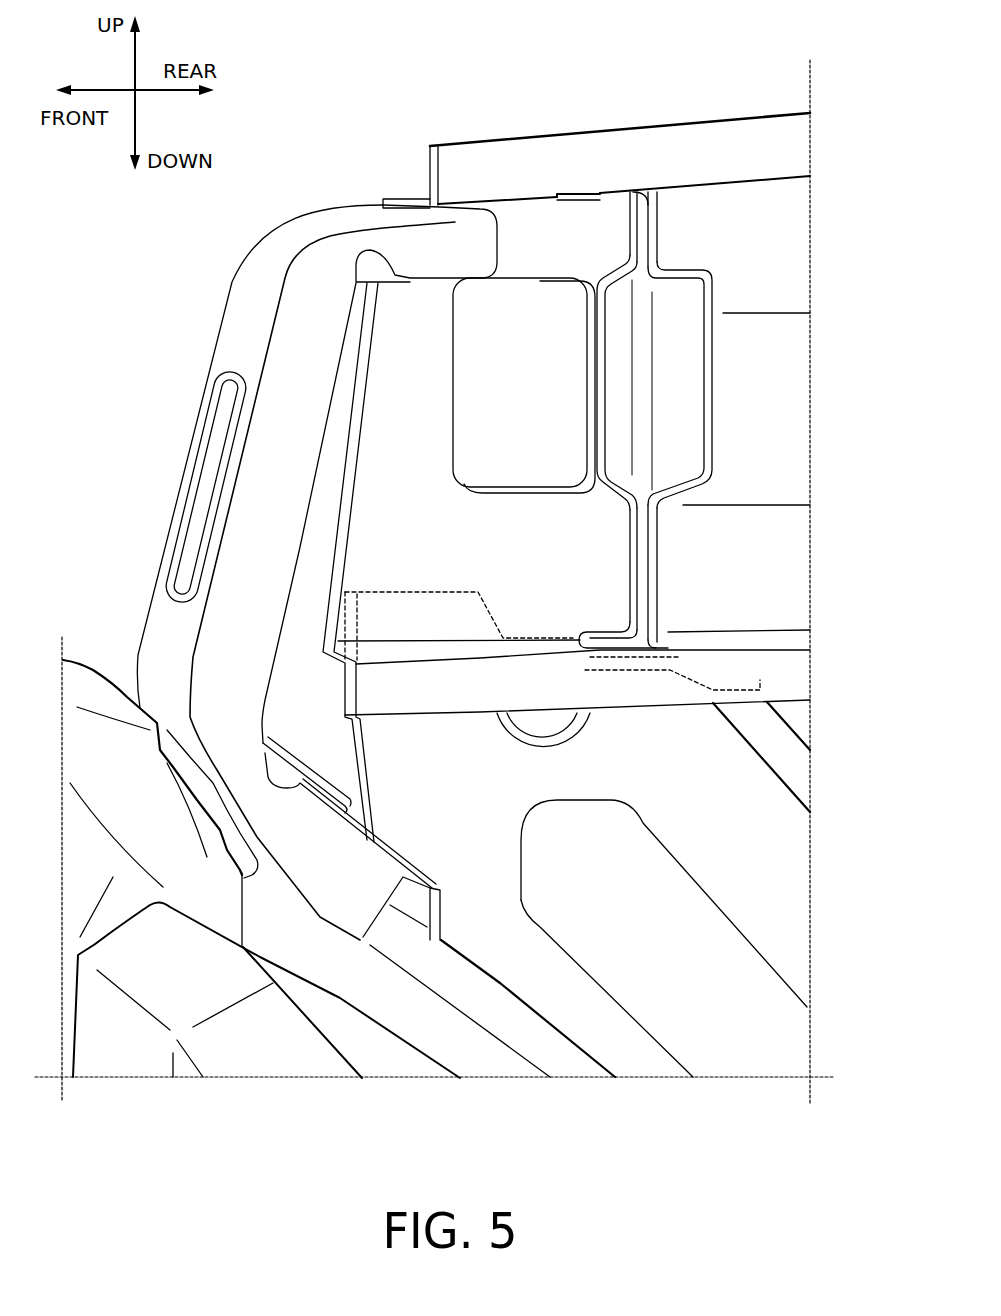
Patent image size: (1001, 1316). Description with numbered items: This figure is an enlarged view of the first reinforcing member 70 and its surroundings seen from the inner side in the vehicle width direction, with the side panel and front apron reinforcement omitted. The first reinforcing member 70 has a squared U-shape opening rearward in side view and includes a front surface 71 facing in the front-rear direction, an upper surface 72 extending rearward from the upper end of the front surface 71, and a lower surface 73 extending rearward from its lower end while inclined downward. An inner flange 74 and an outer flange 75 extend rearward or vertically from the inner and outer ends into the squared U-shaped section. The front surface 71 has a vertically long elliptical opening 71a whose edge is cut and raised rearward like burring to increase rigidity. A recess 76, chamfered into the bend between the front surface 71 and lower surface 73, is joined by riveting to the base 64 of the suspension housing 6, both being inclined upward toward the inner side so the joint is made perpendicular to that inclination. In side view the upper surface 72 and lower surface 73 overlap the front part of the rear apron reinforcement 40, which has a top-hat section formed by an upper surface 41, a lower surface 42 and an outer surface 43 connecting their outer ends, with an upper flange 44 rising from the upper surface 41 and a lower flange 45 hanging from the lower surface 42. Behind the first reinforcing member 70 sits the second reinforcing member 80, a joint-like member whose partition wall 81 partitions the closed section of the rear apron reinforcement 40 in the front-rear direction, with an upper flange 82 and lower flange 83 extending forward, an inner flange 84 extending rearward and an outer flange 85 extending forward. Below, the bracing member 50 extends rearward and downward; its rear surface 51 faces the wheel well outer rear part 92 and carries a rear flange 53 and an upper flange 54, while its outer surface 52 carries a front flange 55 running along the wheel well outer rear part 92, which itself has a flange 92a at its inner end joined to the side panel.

The suspension housing 6 is at (80, 668).
The rear apron reinforcement 40 is at (622, 112).
The upper surface 41 is at (402, 195).
The lower surface 42 is at (712, 640).
The outer surface 43 is at (745, 240).
The upper flange 44 is at (668, 157).
The lower flange 45 is at (445, 690).
The bracing member 50 is at (727, 1025).
The rear surface 51 is at (748, 745).
The outer surface 52 is at (630, 1033).
The rear flange 53 is at (793, 763).
The upper flange 54 is at (630, 670).
The front flange 55 is at (417, 907).
The base 64 is at (203, 807).
The first reinforcing member 70 is at (200, 339).
The front surface 71 is at (165, 618).
The opening 71a is at (205, 460).
The upper surface 72 is at (445, 218).
The lower surface 73 is at (280, 880).
The inner flange 74 is at (258, 690).
The outer flange 75 is at (302, 772).
The recess 76 is at (220, 838).
The second reinforcing member 80 is at (614, 420).
The partition wall 81 is at (633, 570).
The upper flange 82 is at (587, 207).
The lower flange 83 is at (608, 624).
The inner flange 84 is at (690, 432).
The outer flange 85 is at (623, 415).
The wheel well outer rear part 92 is at (503, 1017).
The flange 92a is at (410, 1012).